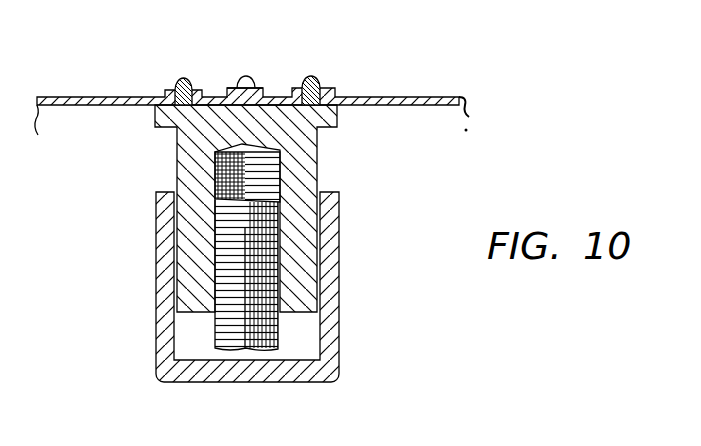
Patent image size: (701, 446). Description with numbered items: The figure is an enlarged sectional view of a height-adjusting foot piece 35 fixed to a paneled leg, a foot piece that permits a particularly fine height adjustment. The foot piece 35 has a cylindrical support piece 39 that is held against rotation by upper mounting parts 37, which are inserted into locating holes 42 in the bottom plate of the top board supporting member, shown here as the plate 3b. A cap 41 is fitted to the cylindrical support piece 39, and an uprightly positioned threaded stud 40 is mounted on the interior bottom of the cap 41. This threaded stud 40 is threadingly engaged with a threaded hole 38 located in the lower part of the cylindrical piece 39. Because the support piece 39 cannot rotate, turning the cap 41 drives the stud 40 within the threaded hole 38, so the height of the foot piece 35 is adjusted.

The mounting plate 3b is at (378, 96).
The locating holes 42 is at (181, 80).
The upper mounting parts 37 is at (306, 76).
The foot piece 35 is at (176, 163).
The threaded hole 38 is at (270, 181).
The cylindrical support piece 39 is at (300, 248).
The threaded stud 40 is at (232, 256).
The cap 41 is at (327, 287).